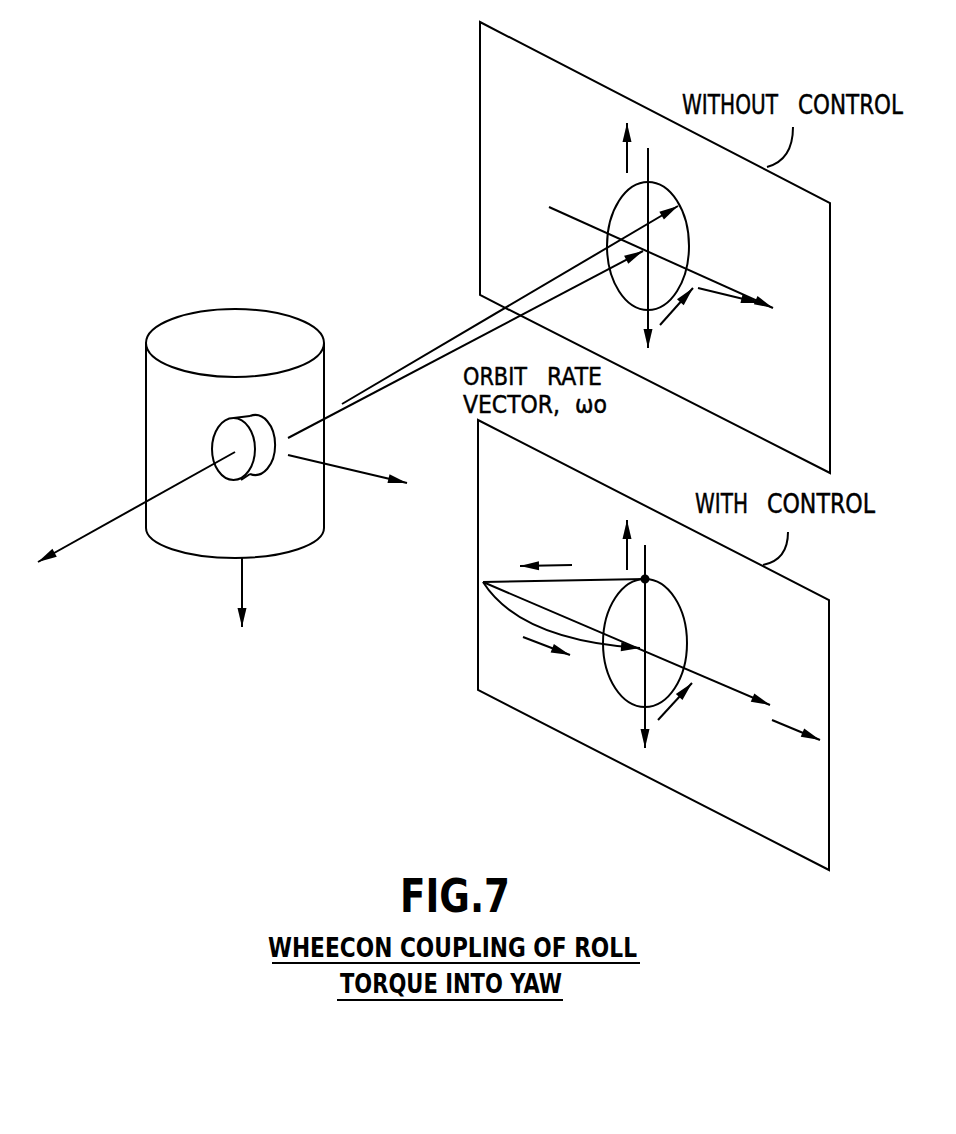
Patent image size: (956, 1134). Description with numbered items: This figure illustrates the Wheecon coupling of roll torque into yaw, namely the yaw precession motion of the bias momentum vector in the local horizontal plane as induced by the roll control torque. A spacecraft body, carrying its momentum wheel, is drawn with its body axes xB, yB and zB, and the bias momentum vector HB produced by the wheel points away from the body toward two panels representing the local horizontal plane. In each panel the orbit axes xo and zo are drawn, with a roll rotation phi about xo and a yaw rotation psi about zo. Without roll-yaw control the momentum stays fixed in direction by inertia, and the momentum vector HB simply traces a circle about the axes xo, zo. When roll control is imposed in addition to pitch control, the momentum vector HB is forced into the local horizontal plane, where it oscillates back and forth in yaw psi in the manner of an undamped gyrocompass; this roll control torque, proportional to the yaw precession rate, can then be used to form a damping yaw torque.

The body x axis xB is at (354, 487).
The body y axis yB is at (136, 507).
The body z axis zB is at (245, 610).
The angular momentum vector HB is at (483, 322).
The orbit x axis xo is at (648, 463).
The orbit z axis zo is at (672, 463).
The roll angle phi is at (601, 346).
The yaw angle psi is at (739, 535).